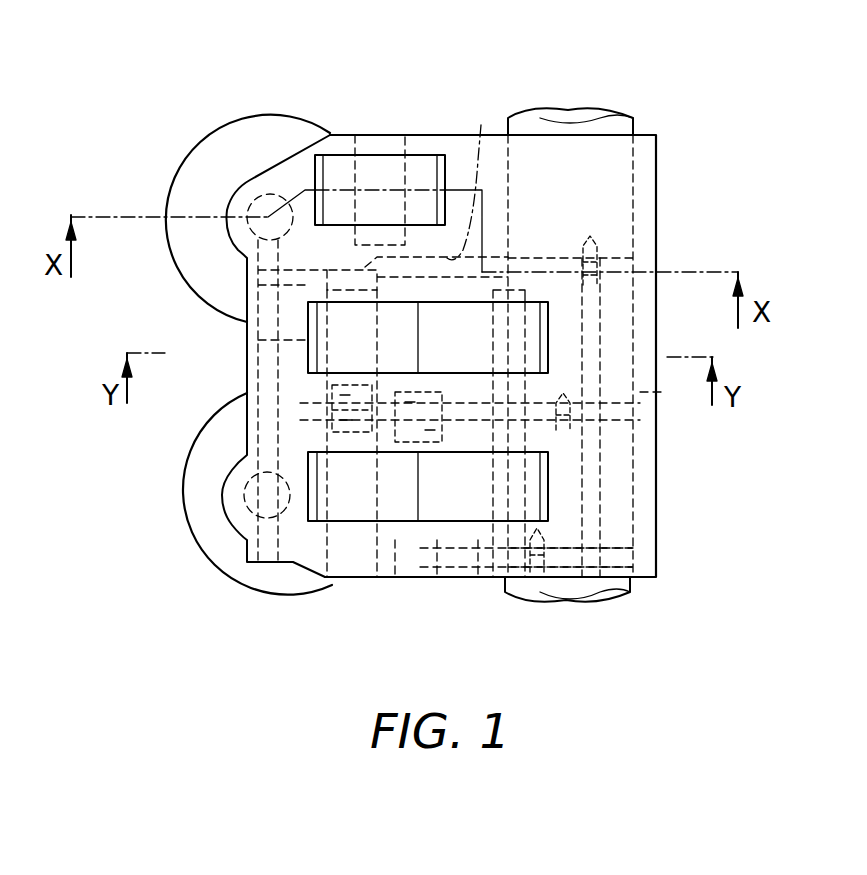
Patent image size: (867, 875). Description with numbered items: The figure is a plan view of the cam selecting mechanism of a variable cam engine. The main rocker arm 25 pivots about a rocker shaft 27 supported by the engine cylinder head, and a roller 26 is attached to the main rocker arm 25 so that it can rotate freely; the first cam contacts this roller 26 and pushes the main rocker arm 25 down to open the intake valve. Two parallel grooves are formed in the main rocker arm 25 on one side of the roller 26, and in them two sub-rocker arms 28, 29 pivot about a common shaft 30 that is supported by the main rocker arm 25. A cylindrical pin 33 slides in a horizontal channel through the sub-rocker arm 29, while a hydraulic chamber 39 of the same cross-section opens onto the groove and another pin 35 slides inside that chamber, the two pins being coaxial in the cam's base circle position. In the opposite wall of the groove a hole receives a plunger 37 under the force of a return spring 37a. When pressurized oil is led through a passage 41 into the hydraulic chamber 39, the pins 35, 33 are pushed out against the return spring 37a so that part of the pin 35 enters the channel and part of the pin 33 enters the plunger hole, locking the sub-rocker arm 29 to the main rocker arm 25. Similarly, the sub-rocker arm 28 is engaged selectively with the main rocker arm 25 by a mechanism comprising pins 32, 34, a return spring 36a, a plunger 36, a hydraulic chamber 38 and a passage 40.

The main rocker arm 25 is at (430, 128).
The roller 26 is at (340, 165).
The rocker shaft 27 is at (597, 113).
The sub-rocker arm 28 is at (483, 482).
The sub-rocker arm 29 is at (480, 322).
The common shaft 30 is at (598, 406).
The pin 32 is at (385, 505).
The cylindrical pin 33 is at (247, 340).
The pin 34 is at (395, 580).
The pin 35 is at (240, 245).
The plunger 36 is at (395, 440).
The return spring 36a is at (398, 445).
The plunger 37 is at (332, 390).
The return spring 37a is at (332, 410).
The hydraulic chamber 38 is at (437, 580).
The hydraulic chamber 39 is at (245, 287).
The passage 40 is at (478, 580).
The passage 41 is at (477, 176).